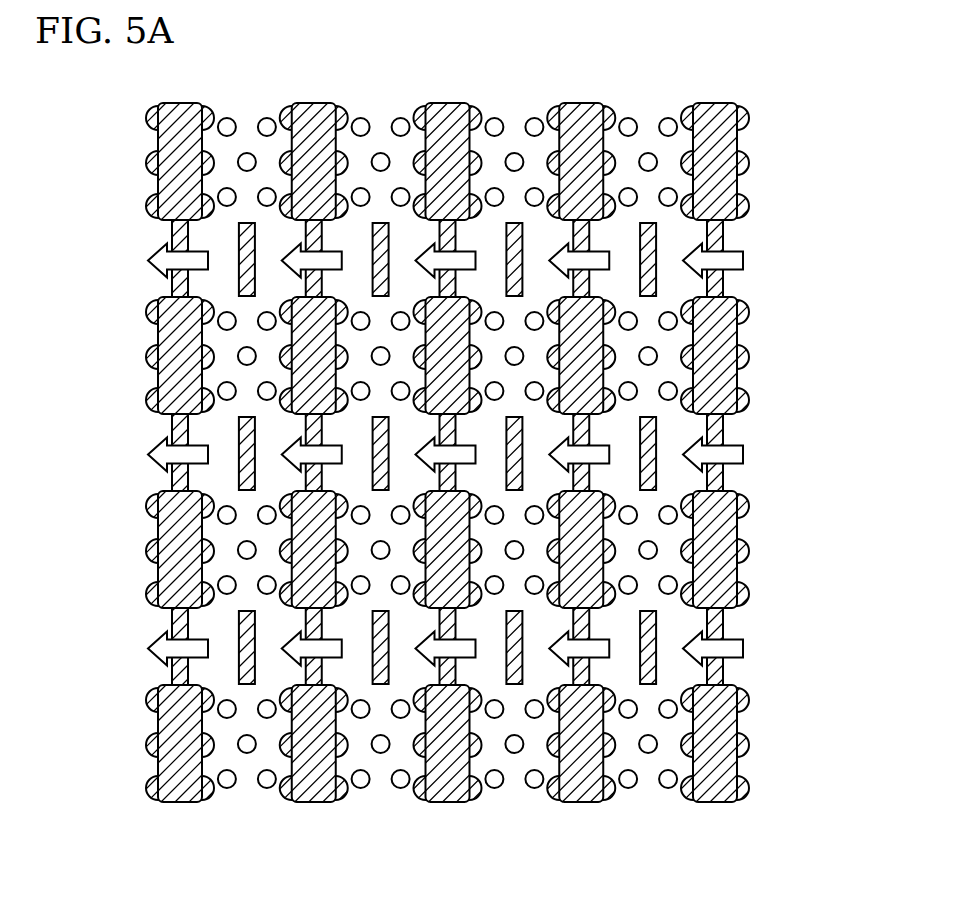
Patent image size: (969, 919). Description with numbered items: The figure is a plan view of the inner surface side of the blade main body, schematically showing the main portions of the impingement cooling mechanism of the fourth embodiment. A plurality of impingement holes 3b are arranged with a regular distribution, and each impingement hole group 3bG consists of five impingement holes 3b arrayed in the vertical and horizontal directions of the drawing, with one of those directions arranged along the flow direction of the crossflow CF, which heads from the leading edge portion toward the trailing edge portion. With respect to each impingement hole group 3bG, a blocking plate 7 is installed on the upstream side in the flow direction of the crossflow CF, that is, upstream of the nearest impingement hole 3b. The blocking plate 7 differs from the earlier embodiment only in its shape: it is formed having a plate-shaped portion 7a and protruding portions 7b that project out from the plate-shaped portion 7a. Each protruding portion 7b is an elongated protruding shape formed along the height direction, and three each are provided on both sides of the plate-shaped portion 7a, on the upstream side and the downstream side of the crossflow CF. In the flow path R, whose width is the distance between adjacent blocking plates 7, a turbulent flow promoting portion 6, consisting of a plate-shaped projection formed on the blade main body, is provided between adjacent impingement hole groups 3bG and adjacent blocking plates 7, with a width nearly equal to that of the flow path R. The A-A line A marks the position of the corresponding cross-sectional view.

The blocking plate 7 is at (449, 497).
The plate-shaped portion 7a is at (180, 806).
The protruding portion 7b is at (147, 745).
The turbulent flow promoting portion 6 is at (177, 286).
The impingement hole 3b is at (364, 117).
The impingement hole group 3bG is at (453, 444).
The flow path R is at (222, 240).
The crossflow CF is at (167, 270).
The A-A line A is at (148, 357).